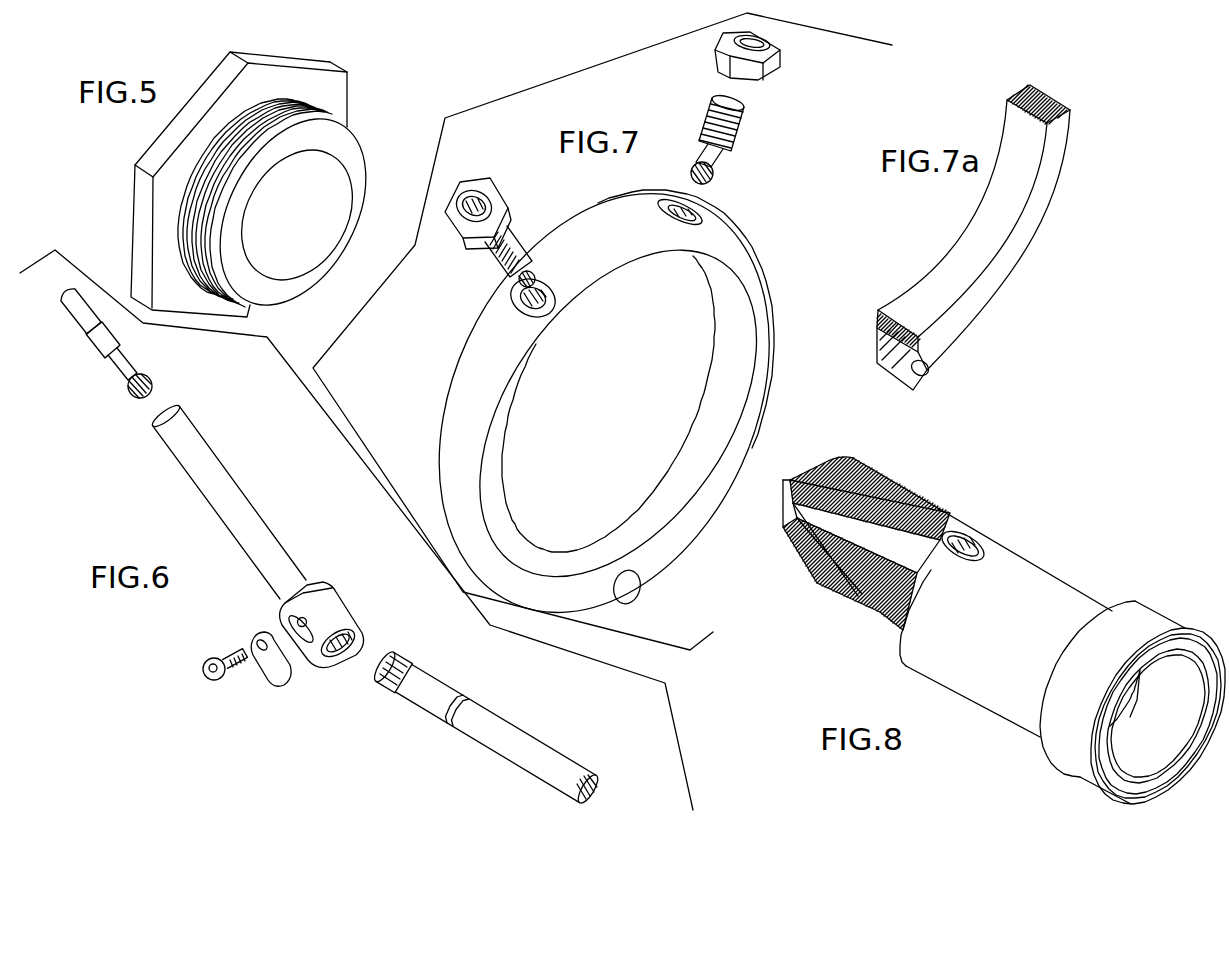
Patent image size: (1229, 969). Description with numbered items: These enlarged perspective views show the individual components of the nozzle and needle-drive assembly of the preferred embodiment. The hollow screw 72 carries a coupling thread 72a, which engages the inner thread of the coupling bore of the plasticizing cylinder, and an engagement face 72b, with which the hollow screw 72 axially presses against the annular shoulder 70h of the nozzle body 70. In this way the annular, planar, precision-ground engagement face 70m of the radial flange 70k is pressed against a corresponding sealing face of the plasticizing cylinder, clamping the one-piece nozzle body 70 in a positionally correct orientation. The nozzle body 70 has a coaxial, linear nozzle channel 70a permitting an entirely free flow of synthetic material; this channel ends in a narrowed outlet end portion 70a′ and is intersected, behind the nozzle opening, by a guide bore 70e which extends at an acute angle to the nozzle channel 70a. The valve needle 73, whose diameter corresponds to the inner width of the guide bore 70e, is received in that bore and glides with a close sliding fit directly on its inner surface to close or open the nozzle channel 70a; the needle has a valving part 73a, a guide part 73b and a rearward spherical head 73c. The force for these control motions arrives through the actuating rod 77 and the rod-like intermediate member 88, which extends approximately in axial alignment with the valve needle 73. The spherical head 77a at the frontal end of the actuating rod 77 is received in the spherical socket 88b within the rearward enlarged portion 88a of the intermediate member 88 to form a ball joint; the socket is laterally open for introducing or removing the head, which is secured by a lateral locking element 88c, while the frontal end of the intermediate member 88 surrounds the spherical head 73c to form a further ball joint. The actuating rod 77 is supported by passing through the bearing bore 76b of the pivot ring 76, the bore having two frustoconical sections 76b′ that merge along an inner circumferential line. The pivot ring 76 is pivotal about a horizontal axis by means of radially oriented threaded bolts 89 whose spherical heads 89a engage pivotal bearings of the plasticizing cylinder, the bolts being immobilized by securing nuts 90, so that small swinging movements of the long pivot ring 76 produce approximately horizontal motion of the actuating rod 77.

In FIG. 8, the nozzle body 70 is at (972, 627).
In FIG. 8, the nozzle channel 70a is at (877, 557).
In FIG. 8, the narrowed outlet end portion 70a′ is at (800, 547).
In FIG. 8, the guide bore 70e is at (843, 583).
In FIG. 8, the annular shoulder 70h is at (1120, 604).
In FIG. 8, the radial flange 70k is at (1160, 618).
In FIG. 8, the planar engagement face 70m is at (1102, 773).
In FIG. 5, the hollow screw 72 is at (235, 191).
In FIG. 5, the coupling thread 72a is at (323, 115).
In FIG. 5, the engagement face 72b is at (352, 217).
In FIG. 6, the valve needle 73 is at (131, 363).
In FIG. 6, the valving part 73a is at (73, 300).
In FIG. 6, the guide part 73b is at (107, 343).
In FIG. 6, the rearward spherical head 73c is at (153, 385).
In FIG. 7, the pivot ring 76 is at (602, 403).
In FIG. 7a, the pivot ring 76 is at (963, 258).
In FIG. 7, the bearing bore 76b is at (633, 595).
In FIG. 7a, the frustoconical sections 76b′ is at (890, 357).
In FIG. 6, the actuating rod 77 is at (495, 705).
In FIG. 6, the spherical head 77a is at (398, 658).
In FIG. 6, the intermediate member 88 is at (281, 583).
In FIG. 6, the rearward enlarged portion 88a is at (333, 612).
In FIG. 6, the spherical socket 88b is at (338, 660).
In FIG. 6, the lateral locking element 88c is at (280, 675).
In FIG. 7, the threaded bolts 89 is at (490, 265).
In FIG. 7, the spherical heads 89a is at (503, 287).
In FIG. 7, the securing nuts 90 is at (470, 180).